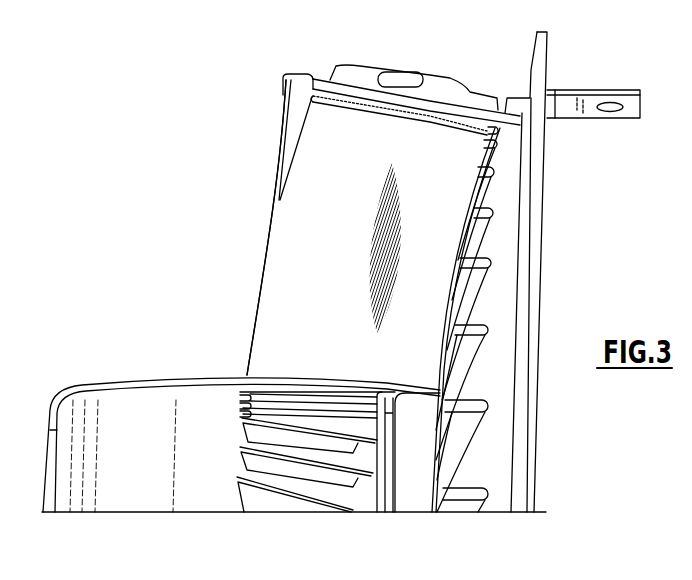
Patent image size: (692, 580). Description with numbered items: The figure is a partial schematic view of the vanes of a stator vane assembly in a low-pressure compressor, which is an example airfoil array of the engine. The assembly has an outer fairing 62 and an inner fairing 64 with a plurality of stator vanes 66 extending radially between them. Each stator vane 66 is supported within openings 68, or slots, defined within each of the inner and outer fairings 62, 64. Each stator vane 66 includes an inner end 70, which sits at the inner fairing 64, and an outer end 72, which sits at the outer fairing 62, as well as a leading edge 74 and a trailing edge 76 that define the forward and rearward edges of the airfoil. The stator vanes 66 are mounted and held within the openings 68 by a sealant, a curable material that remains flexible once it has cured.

The outer fairing 62 is at (306, 84).
The inner fairing 64 is at (204, 412).
The stator vane 66 is at (310, 233).
The opening 68 is at (512, 0).
The inner end 70 is at (233, 477).
The outer end 72 is at (501, 48).
The leading edge 74 is at (252, 279).
The trailing edge 76 is at (480, 197).